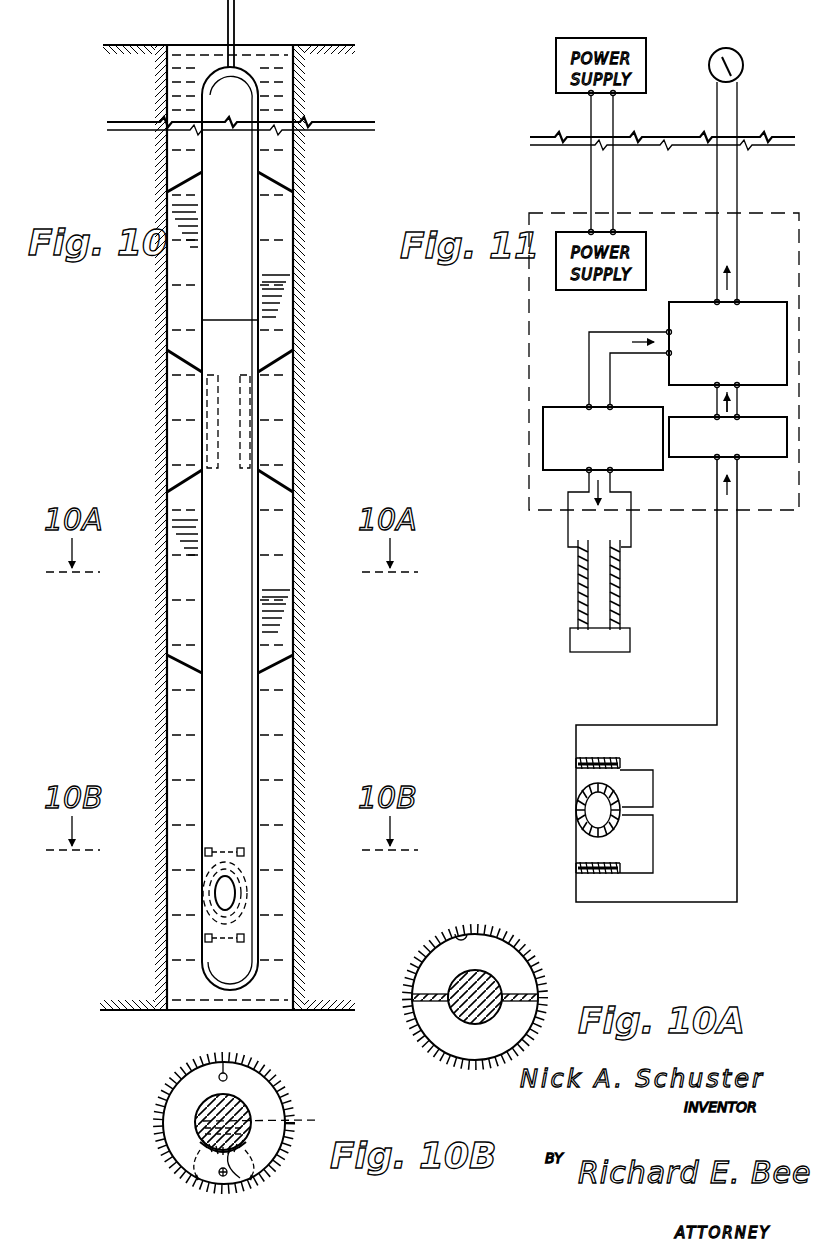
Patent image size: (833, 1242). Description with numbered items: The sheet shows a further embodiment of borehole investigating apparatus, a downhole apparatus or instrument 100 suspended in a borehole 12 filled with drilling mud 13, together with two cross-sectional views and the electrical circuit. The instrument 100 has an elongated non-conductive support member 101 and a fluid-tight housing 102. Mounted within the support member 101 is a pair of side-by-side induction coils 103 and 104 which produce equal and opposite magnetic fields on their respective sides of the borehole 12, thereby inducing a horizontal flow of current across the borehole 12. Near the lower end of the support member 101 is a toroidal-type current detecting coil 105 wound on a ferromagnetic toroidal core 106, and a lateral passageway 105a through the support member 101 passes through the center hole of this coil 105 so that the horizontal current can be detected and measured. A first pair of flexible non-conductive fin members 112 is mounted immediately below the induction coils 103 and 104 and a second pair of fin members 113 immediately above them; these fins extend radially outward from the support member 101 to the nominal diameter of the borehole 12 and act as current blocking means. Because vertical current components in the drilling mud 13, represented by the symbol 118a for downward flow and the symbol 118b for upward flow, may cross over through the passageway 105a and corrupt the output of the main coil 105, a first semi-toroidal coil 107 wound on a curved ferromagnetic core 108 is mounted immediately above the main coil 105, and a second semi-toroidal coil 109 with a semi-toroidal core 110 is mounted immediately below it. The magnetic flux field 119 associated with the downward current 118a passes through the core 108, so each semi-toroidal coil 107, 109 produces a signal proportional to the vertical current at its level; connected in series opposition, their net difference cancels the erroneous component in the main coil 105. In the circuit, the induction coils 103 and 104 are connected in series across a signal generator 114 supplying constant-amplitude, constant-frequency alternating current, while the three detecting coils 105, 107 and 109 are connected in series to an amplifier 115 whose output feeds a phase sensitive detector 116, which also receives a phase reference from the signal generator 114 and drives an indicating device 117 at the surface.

In FIG. 10, the borehole 12 is at (165, 445).
In FIG. 10A, the borehole 12 is at (455, 934).
In FIG. 10B, the borehole 12 is at (168, 1108).
In FIG. 10, the drilling mud 13 is at (182, 78).
In FIG. 10, the downhole apparatus 100 is at (200, 608).
In FIG. 10, the support member 101 is at (200, 697).
In FIG. 10A, the support member 101 is at (505, 945).
In FIG. 10B, the support member 101 is at (205, 1105).
In FIG. 10, the fluid-tight housing 102 is at (205, 150).
In FIG. 11, the fluid-tight housing 102 is at (662, 213).
In FIG. 10, the induction coil 103 is at (207, 400).
In FIG. 11, the induction coil 103 is at (578, 578).
In FIG. 10, the induction coil 104 is at (250, 405).
In FIG. 11, the induction coil 104 is at (620, 596).
In FIG. 10, the toroidal current detecting coil 105 is at (247, 910).
In FIG. 11, the toroidal current detecting coil 105 is at (578, 803).
In FIG. 10B, the toroidal current detecting coil 105 is at (279, 1110).
In FIG. 10, the lateral passageway 105a is at (226, 893).
In FIG. 11, the toroidal core 106 is at (578, 815).
In FIG. 10, the first semi-toroidal coil 107 is at (244, 850).
In FIG. 11, the first semi-toroidal coil 107 is at (612, 760).
In FIG. 10B, the first semi-toroidal coil 107 is at (205, 1148).
In FIG. 11, the ferromagnetic core 108 is at (578, 768).
In FIG. 10B, the ferromagnetic core 108 is at (240, 1178).
In FIG. 10, the second semi-toroidal coil 109 is at (244, 940).
In FIG. 11, the second semi-toroidal coil 109 is at (578, 863).
In FIG. 11, the semi-toroidal core 110 is at (578, 870).
In FIG. 10, the non-conductive fin members 112 is at (293, 474).
In FIG. 10A, the non-conductive fin members 112 is at (525, 967).
In FIG. 10, the non-conductive fin members 113 is at (293, 176).
In FIG. 11, the signal generator 114 is at (558, 407).
In FIG. 11, the amplifier 115 is at (765, 459).
In FIG. 11, the phase sensitive detector 116 is at (755, 302).
In FIG. 11, the indicating device 117 is at (743, 65).
In FIG. 10B, the symbol representing downward current flow 118a is at (200, 1180).
In FIG. 10B, the symbol representing upward current flow 118b is at (223, 1062).
In FIG. 10B, the magnetic flux field 119 is at (223, 1176).